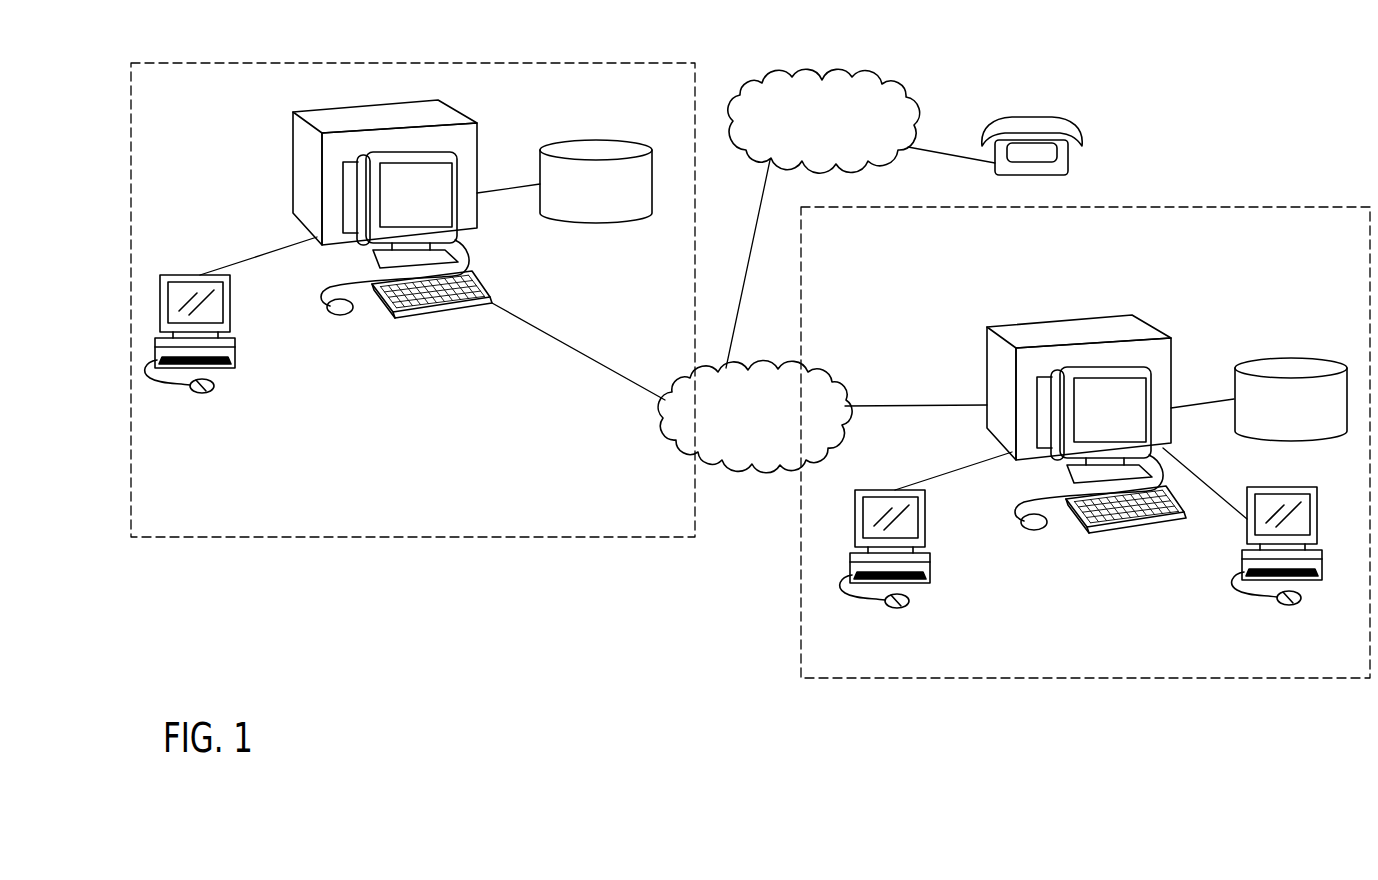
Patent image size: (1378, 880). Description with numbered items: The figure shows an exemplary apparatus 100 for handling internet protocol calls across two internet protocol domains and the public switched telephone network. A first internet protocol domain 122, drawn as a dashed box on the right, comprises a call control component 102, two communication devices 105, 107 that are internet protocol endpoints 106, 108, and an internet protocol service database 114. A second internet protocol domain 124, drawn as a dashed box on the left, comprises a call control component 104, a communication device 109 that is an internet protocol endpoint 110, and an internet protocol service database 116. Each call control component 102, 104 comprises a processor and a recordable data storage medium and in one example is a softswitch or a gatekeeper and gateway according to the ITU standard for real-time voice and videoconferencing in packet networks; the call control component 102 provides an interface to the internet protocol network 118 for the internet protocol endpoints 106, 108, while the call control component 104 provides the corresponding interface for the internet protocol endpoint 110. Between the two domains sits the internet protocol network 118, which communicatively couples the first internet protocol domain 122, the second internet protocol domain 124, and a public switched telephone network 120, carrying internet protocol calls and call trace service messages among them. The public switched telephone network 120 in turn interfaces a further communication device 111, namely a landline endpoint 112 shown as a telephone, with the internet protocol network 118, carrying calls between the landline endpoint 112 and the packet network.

The apparatus 100 is at (191, 25).
The call control component 102 is at (1077, 528).
The call control component 104 is at (458, 113).
The communication device 105 is at (1199, 595).
The internet protocol endpoint 106 is at (1247, 533).
The communication device 107 is at (961, 580).
The internet protocol endpoint 108 is at (925, 533).
The communication device 109 is at (267, 359).
The internet protocol endpoint 110 is at (230, 300).
The communication device 111 is at (990, 90).
The landline endpoint 112 is at (1030, 116).
The internet protocol service database 114 is at (1297, 444).
The internet protocol service database 116 is at (597, 224).
The internet protocol network 118 is at (668, 440).
The public switched telephone network 120 is at (797, 72).
The first internet protocol domain 122 is at (1248, 207).
The second internet protocol domain 124 is at (414, 63).